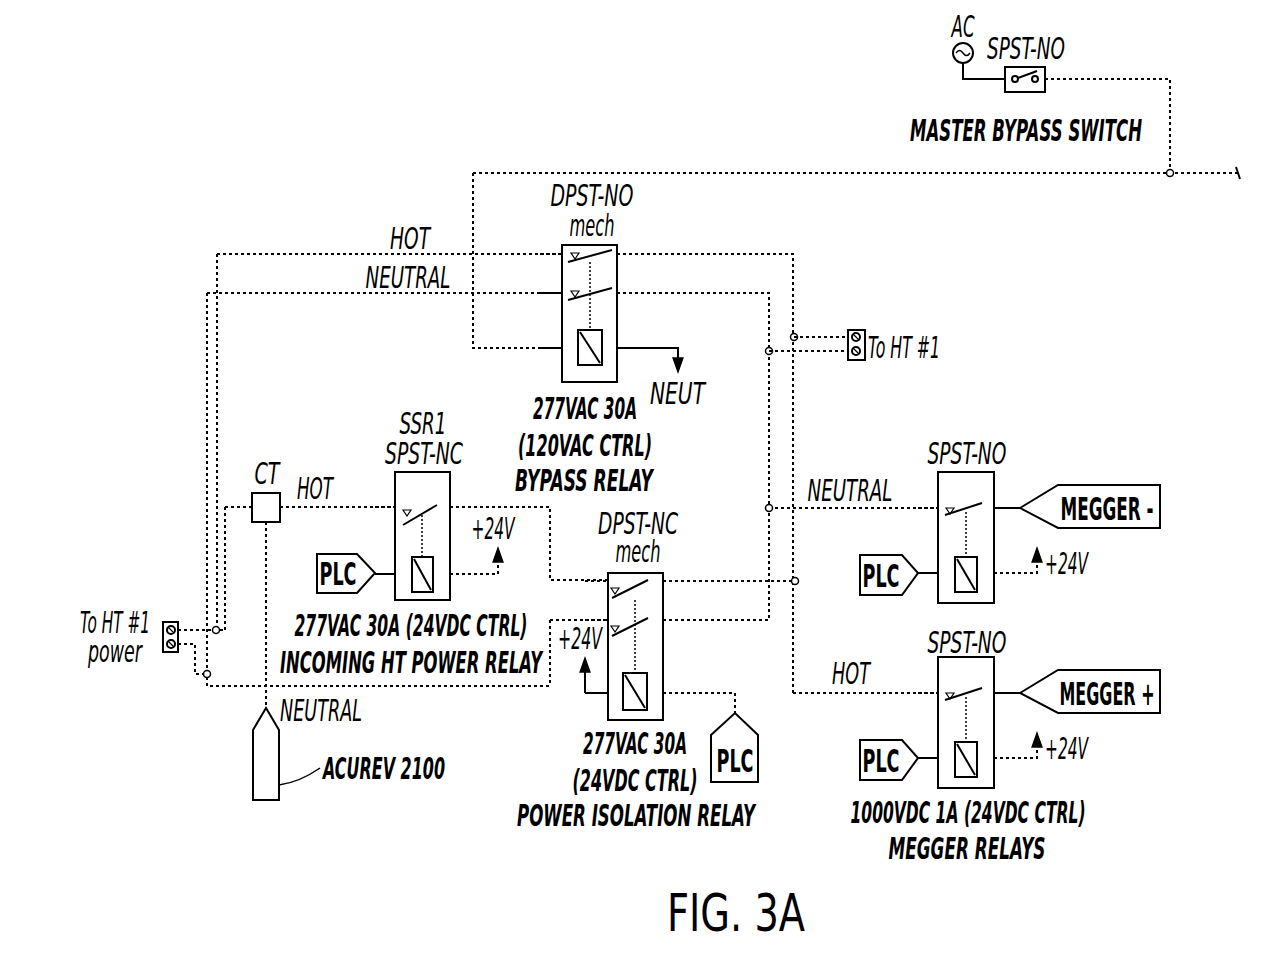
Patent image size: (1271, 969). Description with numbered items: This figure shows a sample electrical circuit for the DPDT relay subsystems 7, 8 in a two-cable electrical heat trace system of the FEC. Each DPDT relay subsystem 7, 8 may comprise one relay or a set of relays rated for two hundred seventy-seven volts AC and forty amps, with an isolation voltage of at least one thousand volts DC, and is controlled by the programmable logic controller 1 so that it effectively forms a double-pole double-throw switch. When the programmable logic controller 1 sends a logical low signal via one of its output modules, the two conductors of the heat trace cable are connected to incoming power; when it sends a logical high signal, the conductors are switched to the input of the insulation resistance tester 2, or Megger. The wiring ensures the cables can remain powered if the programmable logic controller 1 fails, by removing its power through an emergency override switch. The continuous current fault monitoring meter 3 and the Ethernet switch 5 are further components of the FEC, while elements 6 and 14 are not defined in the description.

The Programmable Logic Controller (PLC) 1 is at (619, 386).
The Insulation Resistance Tester (IRT or Megger) 2 is at (620, 420).
The Continuous Current Fault Monitoring Meter 1 3 is at (460, 560).
The Ethernet Switch 5 is at (385, 560).
The relay coil terminal pin 6 is at (739, 539).
The DPDT Relay Subsystem 7 is at (656, 477).
The DPDT Relay Subsystem 8 is at (574, 401).
The relay contact terminal pin 14 is at (655, 401).